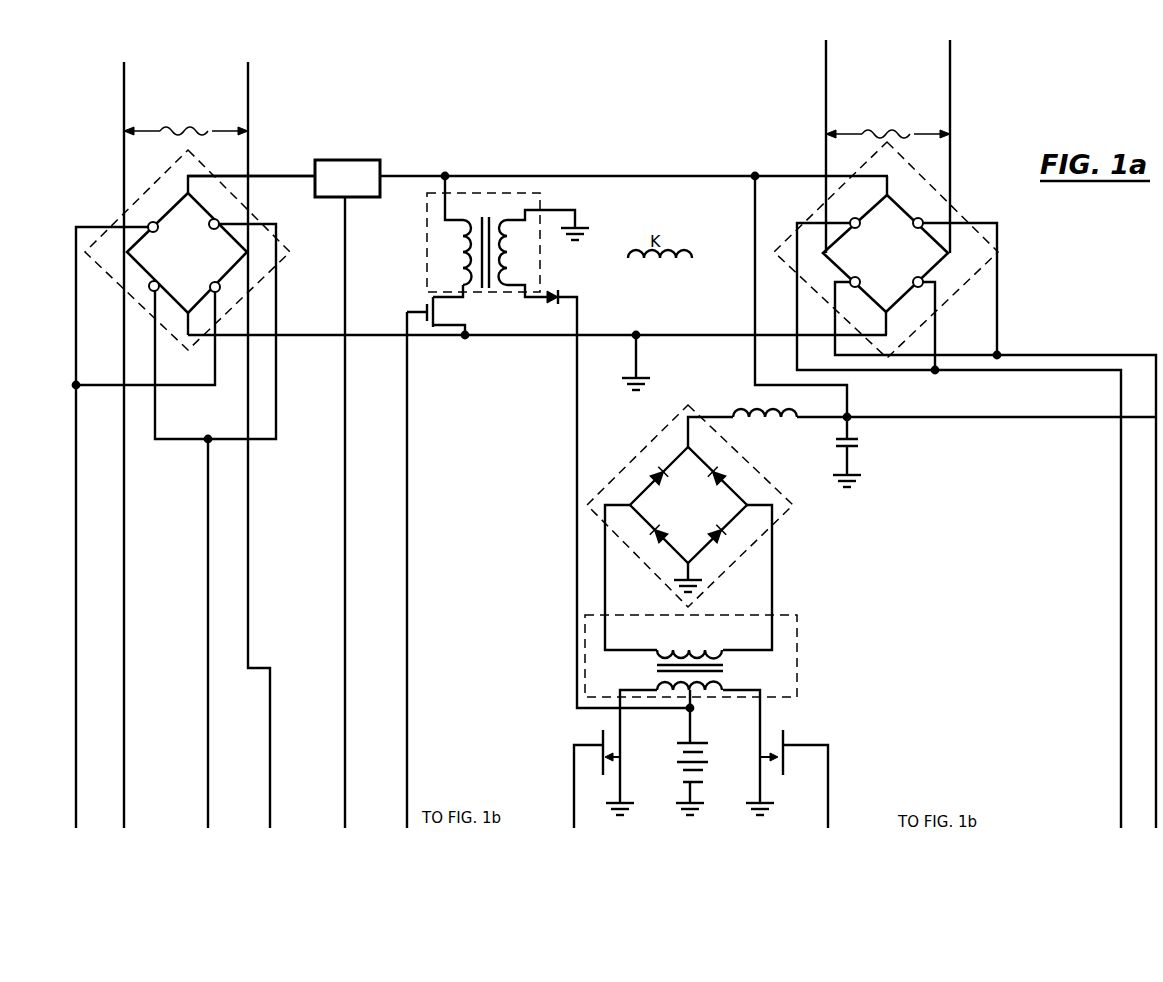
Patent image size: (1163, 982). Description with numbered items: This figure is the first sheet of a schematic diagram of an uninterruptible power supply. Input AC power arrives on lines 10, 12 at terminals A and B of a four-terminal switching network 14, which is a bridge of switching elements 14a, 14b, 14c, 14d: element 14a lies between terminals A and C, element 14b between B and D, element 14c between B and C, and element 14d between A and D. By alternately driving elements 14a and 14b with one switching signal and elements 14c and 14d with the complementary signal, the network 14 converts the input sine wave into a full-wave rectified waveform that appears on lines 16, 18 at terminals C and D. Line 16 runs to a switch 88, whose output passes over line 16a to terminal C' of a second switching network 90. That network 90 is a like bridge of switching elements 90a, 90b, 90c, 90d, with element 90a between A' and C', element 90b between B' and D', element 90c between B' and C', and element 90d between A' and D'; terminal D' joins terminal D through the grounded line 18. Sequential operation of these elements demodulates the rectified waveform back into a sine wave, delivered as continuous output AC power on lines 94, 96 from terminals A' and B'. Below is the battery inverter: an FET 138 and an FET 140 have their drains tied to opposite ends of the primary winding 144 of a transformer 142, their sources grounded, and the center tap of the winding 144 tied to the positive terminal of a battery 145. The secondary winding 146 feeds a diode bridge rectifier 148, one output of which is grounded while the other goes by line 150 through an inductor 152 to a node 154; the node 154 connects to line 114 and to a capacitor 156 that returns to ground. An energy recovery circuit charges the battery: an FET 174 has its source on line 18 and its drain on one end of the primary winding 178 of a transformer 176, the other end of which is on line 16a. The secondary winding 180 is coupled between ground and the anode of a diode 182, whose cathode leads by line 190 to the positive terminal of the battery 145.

The input AC power line 10 is at (123, 148).
The input AC power line 12 is at (250, 123).
The switching network 14 is at (166, 173).
The switching element 14a is at (148, 221).
The switching element 14b is at (220, 292).
The switching element 14c is at (220, 220).
The switching element 14d is at (148, 288).
The line 16 is at (283, 176).
The line 16a is at (534, 176).
The line 18 is at (318, 340).
The switch 88 is at (356, 160).
The switching network 90 is at (930, 180).
The switching element 90a is at (852, 219).
The switching element 90b is at (920, 282).
The switching element 90c is at (920, 222).
The switching element 90d is at (852, 282).
The output AC power line 94 is at (826, 100).
The output AC power line 96 is at (950, 102).
The line 114 is at (755, 291).
The FET 138 is at (602, 732).
The FET 140 is at (789, 738).
The transformer 142 is at (719, 679).
The primary winding 144 is at (726, 686).
The battery 145 is at (676, 757).
The secondary winding 146 is at (714, 650).
The diode bridge rectifier 148 is at (654, 434).
The line 150 is at (730, 414).
The inductor 152 is at (774, 425).
The node 154 is at (848, 417).
The capacitor 156 is at (858, 440).
The FET 174 is at (427, 306).
The transformer 176 is at (509, 251).
The primary winding 178 is at (470, 289).
The secondary winding 180 is at (511, 291).
The diode 182 is at (558, 293).
The line 190 is at (575, 526).